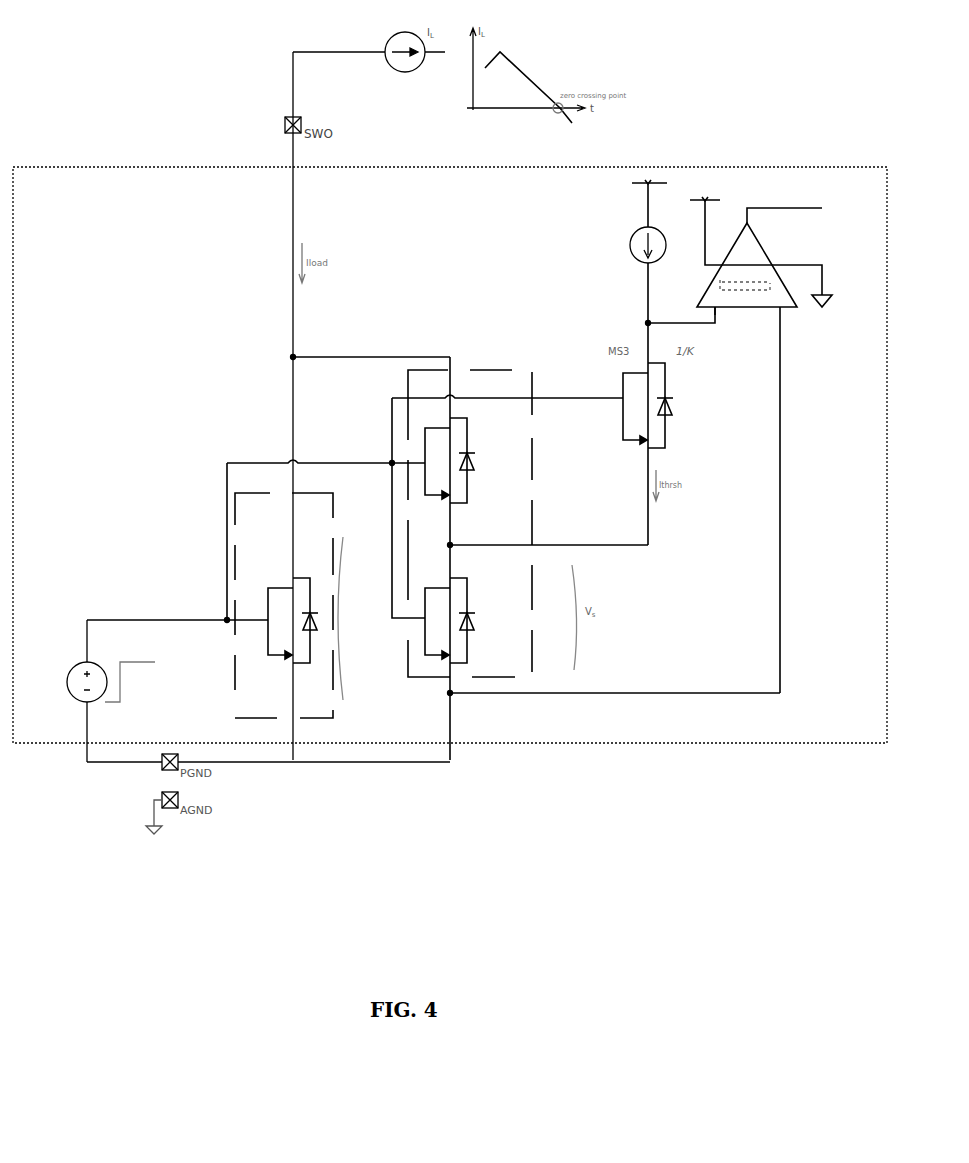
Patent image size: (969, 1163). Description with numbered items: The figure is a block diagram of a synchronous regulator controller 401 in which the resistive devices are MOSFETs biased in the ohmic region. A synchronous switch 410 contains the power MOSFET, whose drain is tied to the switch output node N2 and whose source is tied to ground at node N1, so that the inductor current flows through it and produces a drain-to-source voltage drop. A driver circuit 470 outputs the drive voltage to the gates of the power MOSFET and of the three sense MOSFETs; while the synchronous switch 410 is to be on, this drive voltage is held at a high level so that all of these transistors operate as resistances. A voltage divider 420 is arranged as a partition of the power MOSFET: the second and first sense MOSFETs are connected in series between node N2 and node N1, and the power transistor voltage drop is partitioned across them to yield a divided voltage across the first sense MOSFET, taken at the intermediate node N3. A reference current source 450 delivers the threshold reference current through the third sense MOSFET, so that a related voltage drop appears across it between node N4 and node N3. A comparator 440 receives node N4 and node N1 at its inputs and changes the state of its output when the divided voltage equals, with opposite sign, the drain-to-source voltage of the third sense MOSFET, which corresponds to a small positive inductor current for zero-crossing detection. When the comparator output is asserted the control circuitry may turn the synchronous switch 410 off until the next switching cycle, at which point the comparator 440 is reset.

The synchronous regulator controller 401 is at (450, 455).
The synchronous switch 410 is at (304, 605).
The voltage divider 420 is at (470, 558).
The comparator 440 is at (748, 309).
The threshold current source 450 is at (630, 240).
The driver circuit 470 is at (67, 695).
The node N1 is at (450, 693).
The node N2 is at (293, 357).
The node N3 is at (450, 545).
The node N4 is at (650, 323).